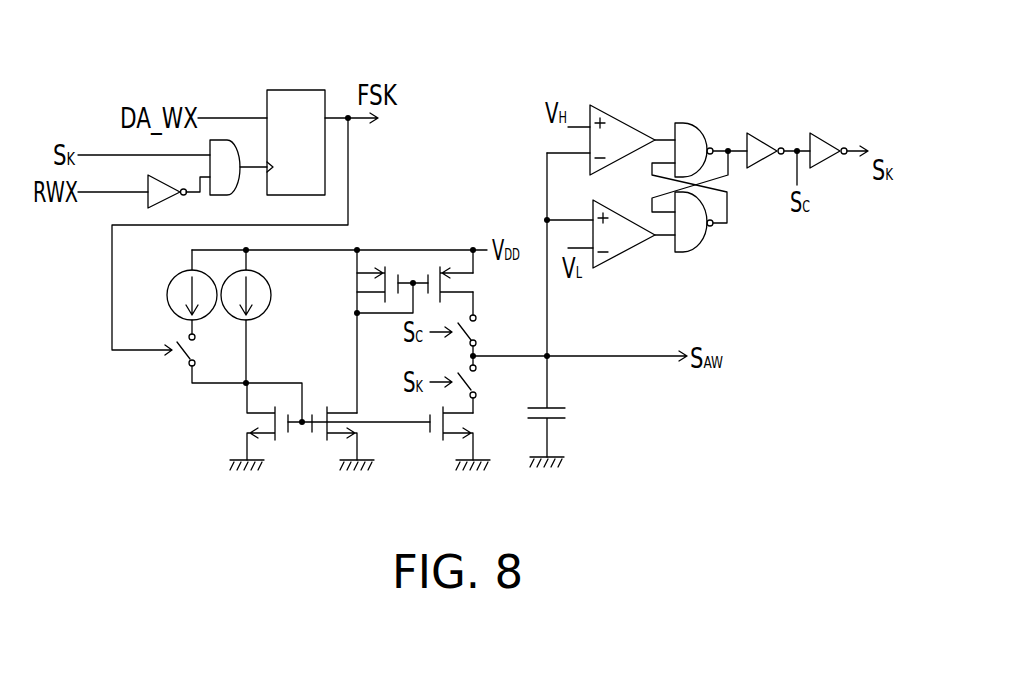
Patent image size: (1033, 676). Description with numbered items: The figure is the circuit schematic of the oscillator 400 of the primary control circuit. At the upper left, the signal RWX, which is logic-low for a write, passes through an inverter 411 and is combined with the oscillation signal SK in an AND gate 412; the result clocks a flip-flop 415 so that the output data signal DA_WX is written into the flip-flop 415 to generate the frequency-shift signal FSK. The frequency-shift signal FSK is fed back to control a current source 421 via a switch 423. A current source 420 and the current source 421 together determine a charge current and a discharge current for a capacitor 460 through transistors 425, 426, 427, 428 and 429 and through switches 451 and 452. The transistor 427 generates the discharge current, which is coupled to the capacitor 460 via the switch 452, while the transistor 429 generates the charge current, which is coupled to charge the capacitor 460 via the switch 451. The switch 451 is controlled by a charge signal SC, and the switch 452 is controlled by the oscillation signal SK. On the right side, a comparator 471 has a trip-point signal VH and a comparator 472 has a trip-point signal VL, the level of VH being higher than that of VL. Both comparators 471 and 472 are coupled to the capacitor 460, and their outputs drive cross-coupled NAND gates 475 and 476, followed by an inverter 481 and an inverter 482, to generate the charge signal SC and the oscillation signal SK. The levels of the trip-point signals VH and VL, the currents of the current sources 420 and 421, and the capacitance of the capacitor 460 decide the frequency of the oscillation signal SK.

The oscillator 400 is at (789, 539).
The inverter 411 is at (148, 181).
The AND gate 412 is at (237, 189).
The flip-flop 415 is at (298, 90).
The current source 420 is at (264, 316).
The current source 421 is at (173, 291).
The switch 423 is at (167, 362).
The transistor 425 is at (244, 421).
The transistor 426 is at (327, 441).
The transistor 427 is at (440, 442).
The transistor 428 is at (355, 286).
The transistor 429 is at (472, 283).
The switch 451 is at (486, 330).
The switch 452 is at (487, 382).
The capacitor 460 is at (571, 406).
The comparator 471 is at (624, 118).
The comparator 472 is at (628, 258).
The NAND gate 475 is at (690, 122).
The NAND gate 476 is at (689, 253).
The inverter 481 is at (768, 121).
The inverter 482 is at (820, 134).